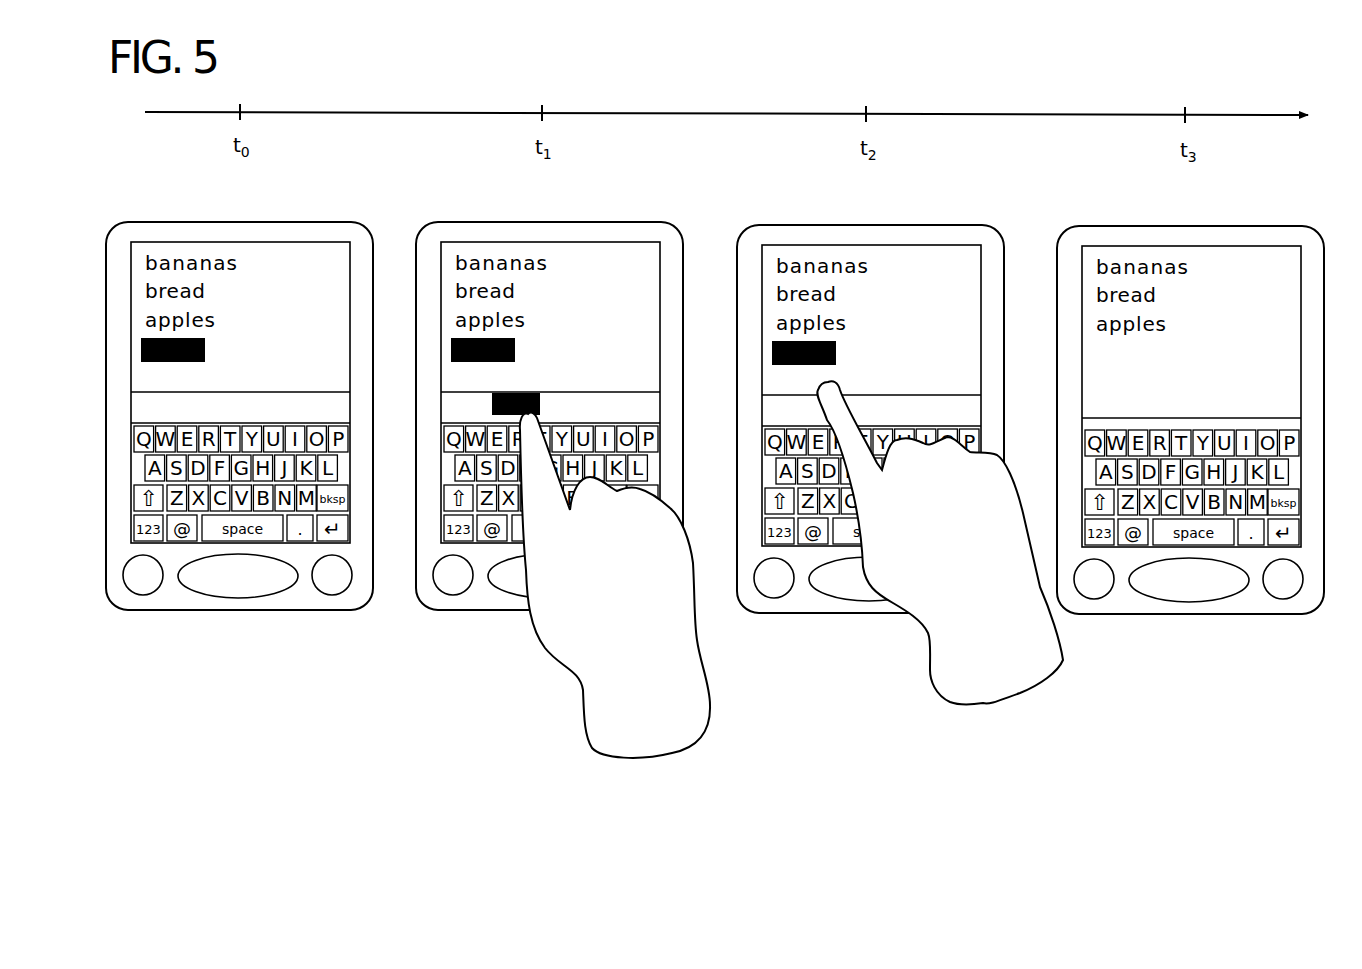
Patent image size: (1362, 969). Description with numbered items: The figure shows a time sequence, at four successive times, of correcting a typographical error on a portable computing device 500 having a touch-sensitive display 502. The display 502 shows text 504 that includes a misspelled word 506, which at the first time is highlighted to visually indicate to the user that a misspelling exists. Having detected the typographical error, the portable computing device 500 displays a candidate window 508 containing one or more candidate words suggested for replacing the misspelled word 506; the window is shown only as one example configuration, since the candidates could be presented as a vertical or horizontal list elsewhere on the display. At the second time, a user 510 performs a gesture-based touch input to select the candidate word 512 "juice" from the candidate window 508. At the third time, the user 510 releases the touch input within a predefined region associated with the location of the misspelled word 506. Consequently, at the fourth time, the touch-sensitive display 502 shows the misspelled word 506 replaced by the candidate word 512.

The portable computing device 500 is at (130, 612).
The touch-sensitive display 502 is at (305, 242).
The text 504 is at (262, 274).
The misspelled word 506 is at (221, 346).
The candidate window 508 is at (280, 390).
The user 510 is at (646, 724).
The candidate word 512 is at (503, 392).